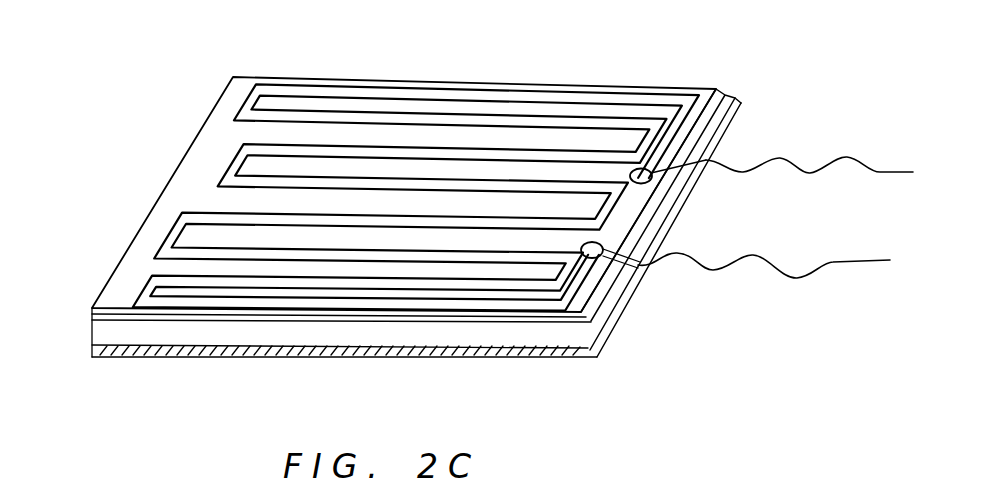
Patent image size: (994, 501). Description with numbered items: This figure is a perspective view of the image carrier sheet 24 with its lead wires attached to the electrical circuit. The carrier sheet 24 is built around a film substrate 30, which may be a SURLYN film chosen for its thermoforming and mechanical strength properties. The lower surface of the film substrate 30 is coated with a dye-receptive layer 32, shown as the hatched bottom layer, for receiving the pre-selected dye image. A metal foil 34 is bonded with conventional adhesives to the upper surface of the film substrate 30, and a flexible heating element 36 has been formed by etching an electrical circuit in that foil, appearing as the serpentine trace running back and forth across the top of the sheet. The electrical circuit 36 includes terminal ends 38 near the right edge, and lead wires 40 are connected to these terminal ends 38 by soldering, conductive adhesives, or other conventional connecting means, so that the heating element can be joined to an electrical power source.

The image carrier sheet 24 is at (479, 218).
The film substrate 30 is at (592, 344).
The dye-receptive layer 32 is at (520, 357).
The metal foil 34 is at (196, 167).
The flexible heating element 36 is at (188, 224).
The terminal ends 38 is at (707, 158).
The lead wires 40 is at (861, 139).